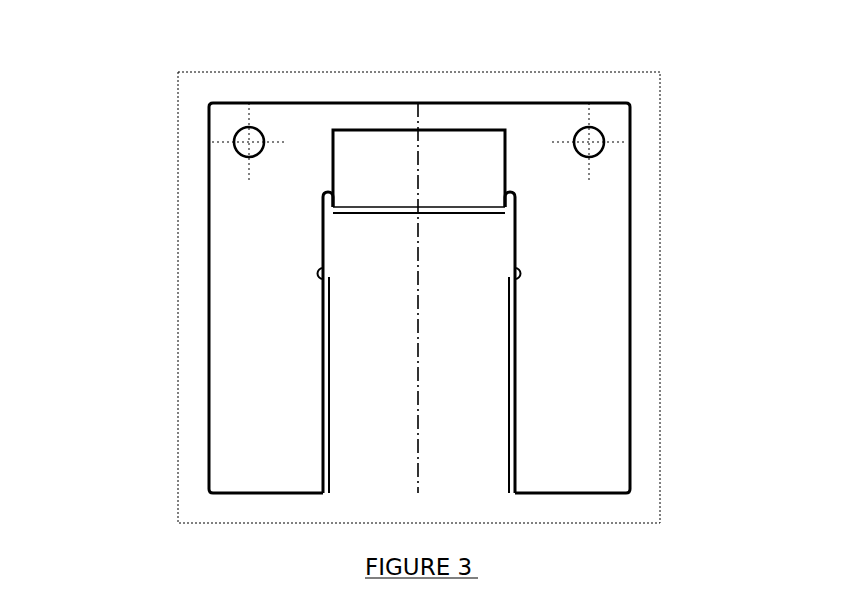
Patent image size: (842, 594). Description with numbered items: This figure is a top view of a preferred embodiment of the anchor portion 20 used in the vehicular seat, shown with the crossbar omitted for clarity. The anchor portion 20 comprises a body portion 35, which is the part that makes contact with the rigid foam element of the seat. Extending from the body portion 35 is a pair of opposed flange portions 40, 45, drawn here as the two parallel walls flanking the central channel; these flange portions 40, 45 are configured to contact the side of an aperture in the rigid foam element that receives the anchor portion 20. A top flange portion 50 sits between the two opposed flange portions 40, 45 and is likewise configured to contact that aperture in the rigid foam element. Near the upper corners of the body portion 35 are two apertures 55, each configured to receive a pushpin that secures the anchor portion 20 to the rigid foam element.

The anchor portion 20 is at (497, 84).
The body portion 35 is at (248, 270).
The first opposed flange portion 40 is at (318, 393).
The second opposed flange portion 45 is at (513, 398).
The top flange portion 50 is at (455, 217).
The apertures 55 is at (248, 127).